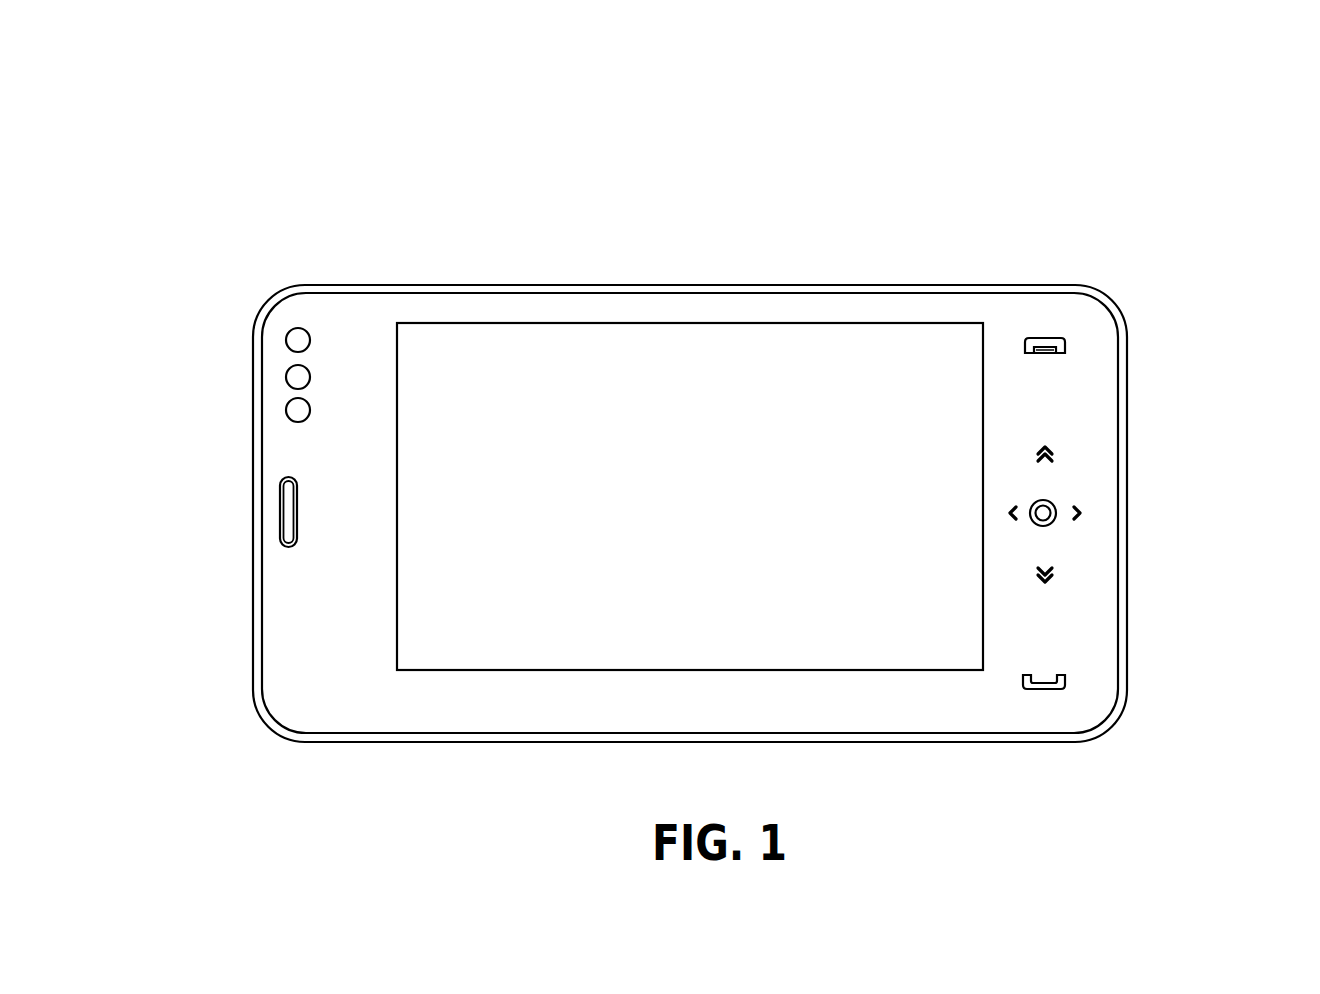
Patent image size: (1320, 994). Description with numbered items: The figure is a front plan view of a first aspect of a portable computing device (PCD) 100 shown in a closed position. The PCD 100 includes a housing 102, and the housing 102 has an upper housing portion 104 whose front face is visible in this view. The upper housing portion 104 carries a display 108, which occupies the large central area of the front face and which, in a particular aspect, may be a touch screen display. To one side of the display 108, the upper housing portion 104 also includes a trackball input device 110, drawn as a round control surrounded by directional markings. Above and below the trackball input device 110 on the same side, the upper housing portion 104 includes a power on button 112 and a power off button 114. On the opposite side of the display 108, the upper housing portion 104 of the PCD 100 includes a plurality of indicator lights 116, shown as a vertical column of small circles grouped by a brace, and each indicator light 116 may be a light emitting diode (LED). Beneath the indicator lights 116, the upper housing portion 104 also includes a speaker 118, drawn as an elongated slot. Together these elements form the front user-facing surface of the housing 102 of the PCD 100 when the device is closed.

The portable computing device 100 is at (1180, 229).
The housing 102 is at (293, 285).
The upper housing portion 104 is at (677, 300).
The display 108 is at (692, 648).
The trackball input device 110 is at (1053, 521).
The power on button 112 is at (1065, 687).
The power off button 114 is at (1063, 340).
The indicator lights 116 is at (288, 320).
The speaker 118 is at (285, 514).